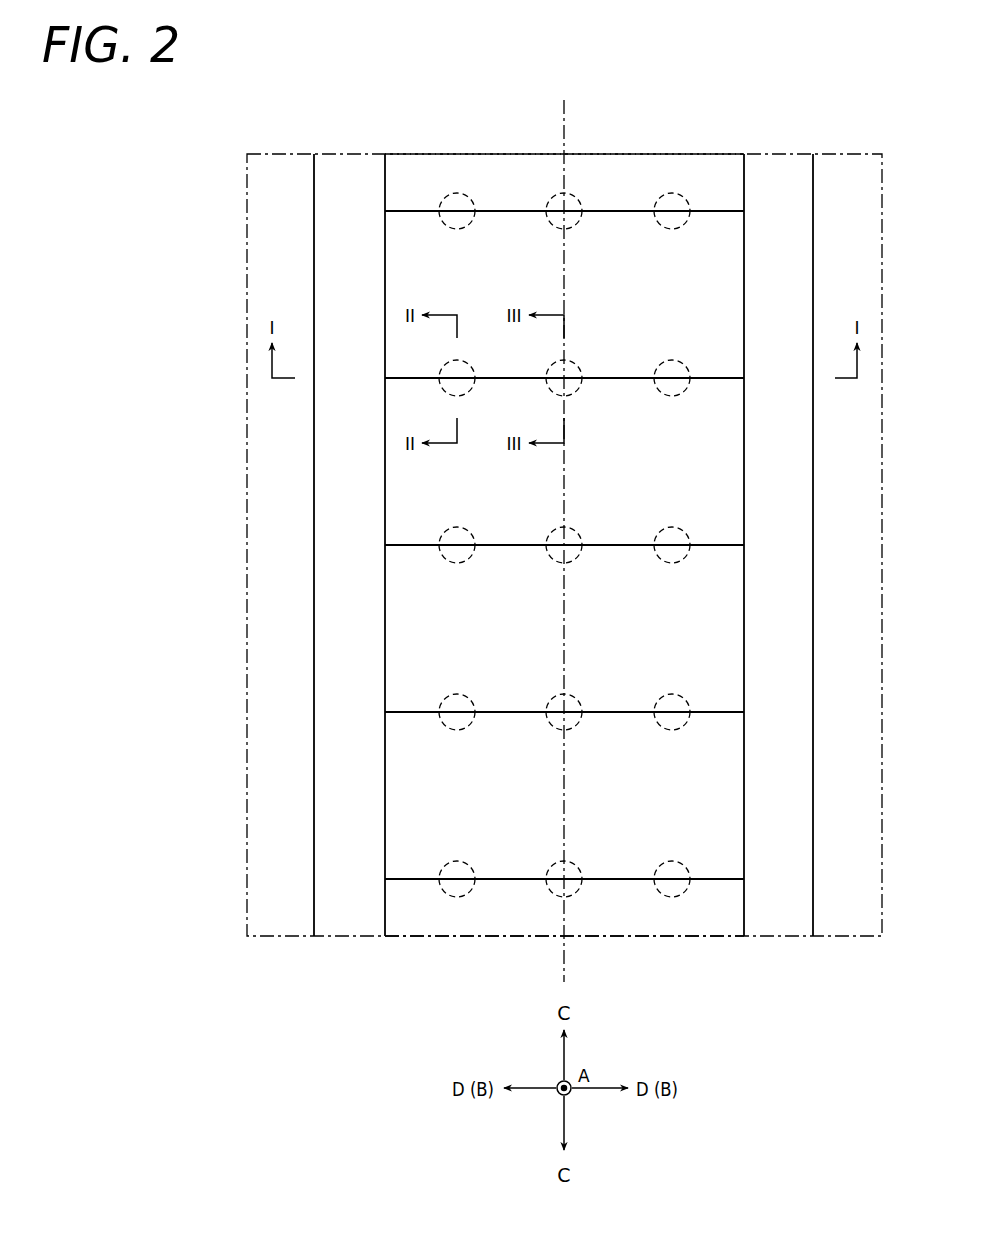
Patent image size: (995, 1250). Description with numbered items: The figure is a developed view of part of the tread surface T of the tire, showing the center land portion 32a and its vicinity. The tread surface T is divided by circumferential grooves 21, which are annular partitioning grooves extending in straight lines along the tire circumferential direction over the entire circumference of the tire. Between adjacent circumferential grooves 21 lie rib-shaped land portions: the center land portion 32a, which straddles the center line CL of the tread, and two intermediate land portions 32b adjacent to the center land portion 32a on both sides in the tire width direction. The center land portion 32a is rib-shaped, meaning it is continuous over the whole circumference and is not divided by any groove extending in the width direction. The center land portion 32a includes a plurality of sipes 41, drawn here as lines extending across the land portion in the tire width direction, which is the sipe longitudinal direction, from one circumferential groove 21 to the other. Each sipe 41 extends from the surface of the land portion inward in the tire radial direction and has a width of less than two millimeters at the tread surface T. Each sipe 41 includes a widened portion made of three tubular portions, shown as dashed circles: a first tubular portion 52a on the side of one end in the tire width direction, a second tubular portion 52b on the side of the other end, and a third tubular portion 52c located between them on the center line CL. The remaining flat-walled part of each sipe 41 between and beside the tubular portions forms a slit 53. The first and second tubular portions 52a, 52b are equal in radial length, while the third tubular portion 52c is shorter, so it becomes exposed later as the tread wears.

The tread surface T is at (737, 98).
The intermediate land portion 32b is at (276, 150).
The circumferential groove 21 is at (348, 150).
The center land portion 32a is at (426, 150).
The center line CL is at (564, 526).
The sipe 41 is at (606, 205).
The slit 53 is at (640, 210).
The first tubular portion 52a is at (444, 219).
The second tubular portion 52b is at (683, 222).
The third tubular portion 52c is at (576, 222).